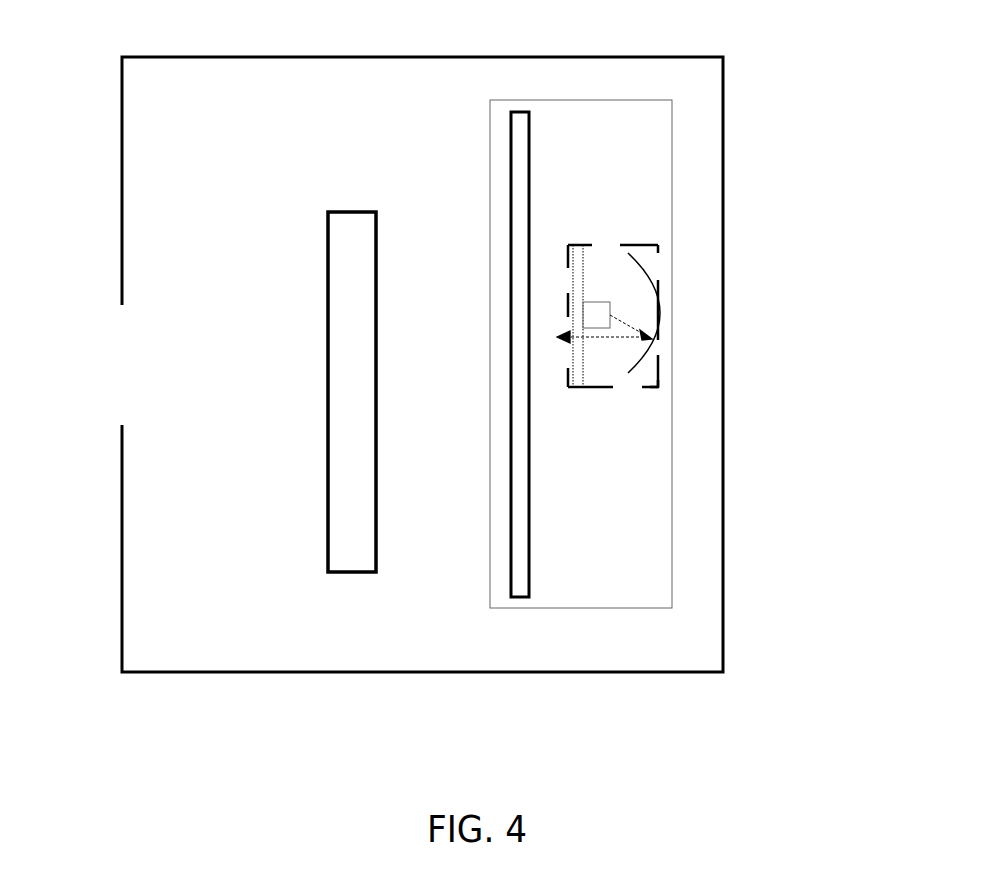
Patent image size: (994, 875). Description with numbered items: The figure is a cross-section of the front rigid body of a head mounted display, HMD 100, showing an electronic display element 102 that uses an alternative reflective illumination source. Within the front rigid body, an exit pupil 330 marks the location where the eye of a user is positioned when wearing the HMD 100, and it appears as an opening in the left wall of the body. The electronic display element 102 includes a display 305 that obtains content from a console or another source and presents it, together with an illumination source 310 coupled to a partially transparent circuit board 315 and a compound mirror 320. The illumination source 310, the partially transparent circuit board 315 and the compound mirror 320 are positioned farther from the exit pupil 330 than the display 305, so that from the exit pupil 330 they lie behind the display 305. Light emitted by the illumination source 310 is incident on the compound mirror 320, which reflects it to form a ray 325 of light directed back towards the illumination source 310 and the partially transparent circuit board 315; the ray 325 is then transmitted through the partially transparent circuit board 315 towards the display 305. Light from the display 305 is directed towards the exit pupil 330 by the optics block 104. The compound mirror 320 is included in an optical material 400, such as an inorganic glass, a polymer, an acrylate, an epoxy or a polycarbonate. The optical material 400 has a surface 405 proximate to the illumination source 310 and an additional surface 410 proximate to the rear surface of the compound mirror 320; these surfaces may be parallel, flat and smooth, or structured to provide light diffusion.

The head mounted display (HMD) 100 is at (693, 52).
The electronic display element 102 is at (672, 155).
The optics block 104 is at (350, 208).
The display 305 is at (515, 112).
The illumination source 310 is at (593, 300).
The partially transparent circuit board 315 is at (580, 388).
The compound mirror 320 is at (660, 296).
The ray of light 325 is at (622, 339).
The exit pupil 330 is at (118, 323).
The optical material 400 is at (605, 357).
The surface 405 is at (568, 243).
The additional surface 410 is at (658, 387).